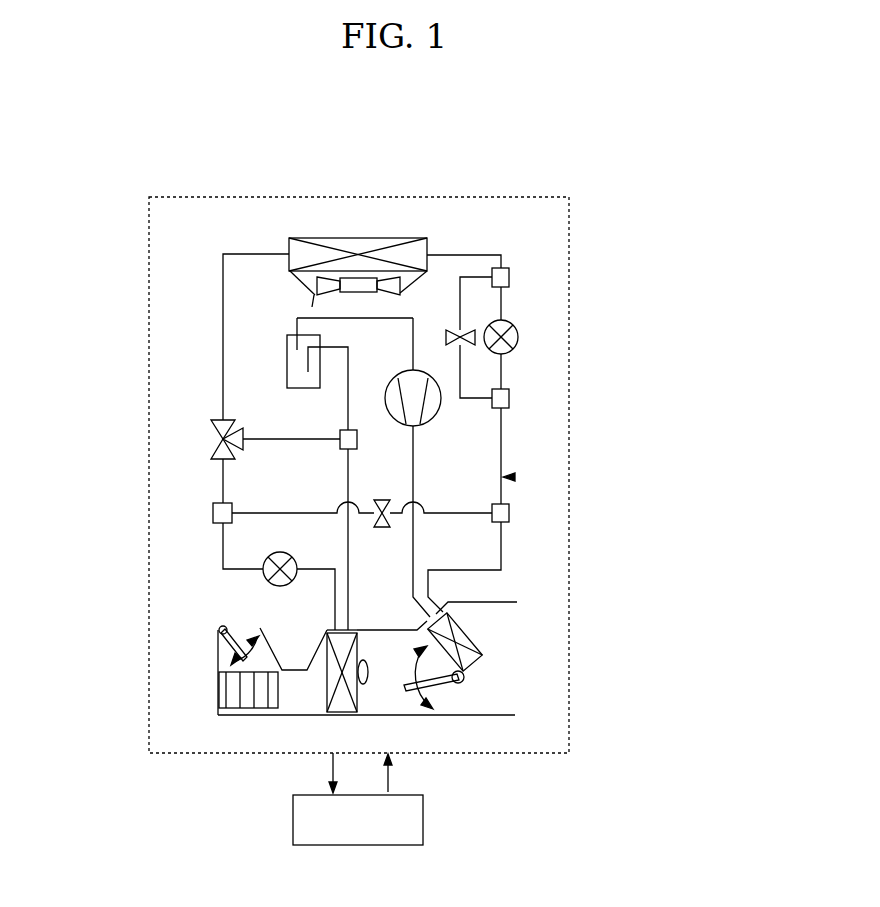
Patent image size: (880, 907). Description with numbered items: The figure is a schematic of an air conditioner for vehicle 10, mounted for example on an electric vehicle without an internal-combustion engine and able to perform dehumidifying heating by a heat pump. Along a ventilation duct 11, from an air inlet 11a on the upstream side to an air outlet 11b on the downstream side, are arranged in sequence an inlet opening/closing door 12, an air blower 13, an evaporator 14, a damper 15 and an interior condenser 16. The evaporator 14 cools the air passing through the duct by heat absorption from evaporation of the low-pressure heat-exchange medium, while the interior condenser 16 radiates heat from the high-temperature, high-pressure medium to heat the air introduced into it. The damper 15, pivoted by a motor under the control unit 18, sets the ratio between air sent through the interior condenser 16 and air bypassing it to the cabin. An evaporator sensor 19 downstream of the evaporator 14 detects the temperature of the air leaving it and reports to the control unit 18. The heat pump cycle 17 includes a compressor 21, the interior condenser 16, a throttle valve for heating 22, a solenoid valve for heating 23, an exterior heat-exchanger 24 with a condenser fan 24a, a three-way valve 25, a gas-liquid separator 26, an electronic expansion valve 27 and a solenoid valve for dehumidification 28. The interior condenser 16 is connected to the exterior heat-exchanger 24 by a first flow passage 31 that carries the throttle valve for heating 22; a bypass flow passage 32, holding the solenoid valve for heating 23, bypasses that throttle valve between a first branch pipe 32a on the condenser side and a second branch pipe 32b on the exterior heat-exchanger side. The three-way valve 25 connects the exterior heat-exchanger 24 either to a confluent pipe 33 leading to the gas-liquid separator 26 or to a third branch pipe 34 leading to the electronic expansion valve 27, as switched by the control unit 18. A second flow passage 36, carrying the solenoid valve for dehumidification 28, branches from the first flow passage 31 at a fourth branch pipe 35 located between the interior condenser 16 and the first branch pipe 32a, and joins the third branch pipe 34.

The air conditioner for vehicle 10 is at (655, 158).
The ventilation duct 11 is at (490, 716).
The air inlet 11a is at (265, 630).
The air outlet 11b is at (517, 602).
The inlet opening/closing door 12 is at (236, 627).
The air blower 13 is at (237, 712).
The evaporator 14 is at (326, 680).
The damper 15 is at (437, 688).
The interior condenser 16 is at (473, 633).
The heat pump cycle 17 is at (560, 393).
The control unit 18 is at (293, 822).
The evaporator sensor 19 is at (368, 680).
The compressor 21 is at (430, 420).
The throttle valve for heating 22 is at (514, 326).
The solenoid valve for heating 23 is at (468, 330).
The exterior heat-exchanger 24 is at (362, 238).
The condenser fan 24a is at (400, 293).
The three-way valve 25 is at (212, 419).
The gas-liquid separator 26 is at (287, 349).
The electronic expansion valve 27 is at (272, 553).
The solenoid valve for dehumidification 28 is at (375, 499).
The first flow passage 31 is at (514, 477).
The bypass flow passage 32 is at (462, 374).
The first branch pipe 32a is at (509, 403).
The second branch pipe 32b is at (509, 277).
The confluent pipe 33 is at (340, 434).
The third branch pipe 34 is at (213, 519).
The fourth branch pipe 35 is at (509, 510).
The second flow passage 36 is at (463, 515).